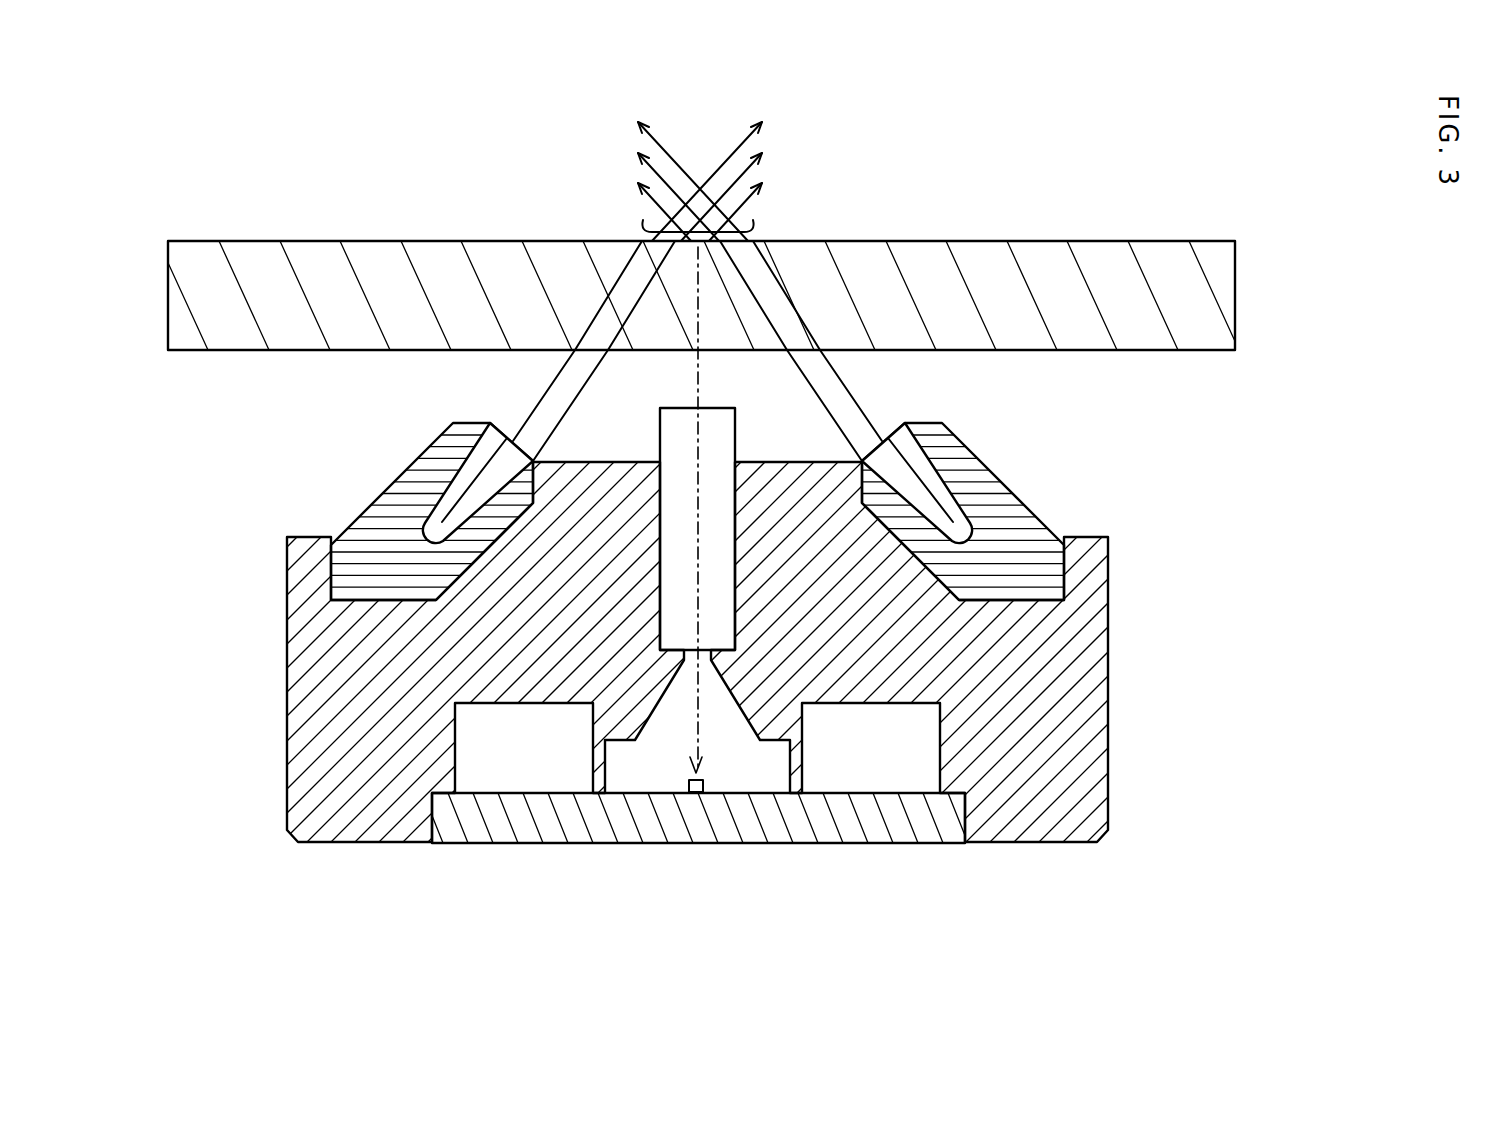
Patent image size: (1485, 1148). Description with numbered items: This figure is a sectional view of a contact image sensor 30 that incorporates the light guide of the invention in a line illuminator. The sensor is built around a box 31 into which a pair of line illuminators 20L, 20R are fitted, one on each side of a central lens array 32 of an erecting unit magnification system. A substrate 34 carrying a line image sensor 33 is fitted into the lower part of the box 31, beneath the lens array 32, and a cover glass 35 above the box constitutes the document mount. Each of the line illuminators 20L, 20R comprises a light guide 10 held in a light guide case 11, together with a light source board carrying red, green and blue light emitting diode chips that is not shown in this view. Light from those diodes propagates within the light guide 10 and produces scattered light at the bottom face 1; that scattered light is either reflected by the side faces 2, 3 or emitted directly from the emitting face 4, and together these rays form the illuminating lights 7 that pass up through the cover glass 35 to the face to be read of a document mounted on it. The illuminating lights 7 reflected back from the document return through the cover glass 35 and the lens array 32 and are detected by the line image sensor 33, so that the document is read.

The bottom face 1 is at (415, 535).
The side face 2 is at (490, 512).
The side face 3 is at (455, 430).
The emitting face 4 is at (498, 422).
The illuminating lights 7 is at (643, 225).
The light guide 10 is at (438, 447).
The light guide case 11 is at (420, 476).
The line illuminator 20L is at (285, 418).
The line illuminator 20R is at (1113, 418).
The contact image sensor 30 is at (742, 575).
The box 31 is at (1124, 699).
The lens array 32 is at (684, 602).
The line image sensor 33 is at (703, 787).
The substrate 34 is at (849, 822).
The cover glass 35 is at (203, 294).